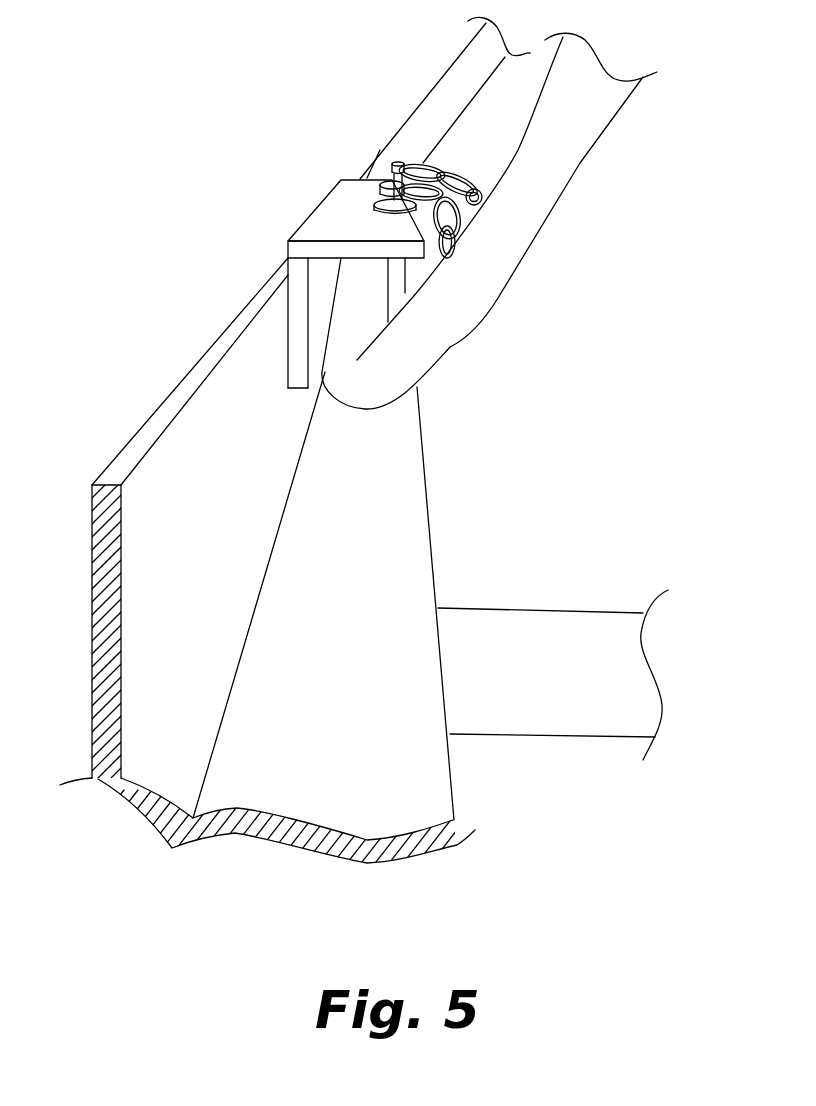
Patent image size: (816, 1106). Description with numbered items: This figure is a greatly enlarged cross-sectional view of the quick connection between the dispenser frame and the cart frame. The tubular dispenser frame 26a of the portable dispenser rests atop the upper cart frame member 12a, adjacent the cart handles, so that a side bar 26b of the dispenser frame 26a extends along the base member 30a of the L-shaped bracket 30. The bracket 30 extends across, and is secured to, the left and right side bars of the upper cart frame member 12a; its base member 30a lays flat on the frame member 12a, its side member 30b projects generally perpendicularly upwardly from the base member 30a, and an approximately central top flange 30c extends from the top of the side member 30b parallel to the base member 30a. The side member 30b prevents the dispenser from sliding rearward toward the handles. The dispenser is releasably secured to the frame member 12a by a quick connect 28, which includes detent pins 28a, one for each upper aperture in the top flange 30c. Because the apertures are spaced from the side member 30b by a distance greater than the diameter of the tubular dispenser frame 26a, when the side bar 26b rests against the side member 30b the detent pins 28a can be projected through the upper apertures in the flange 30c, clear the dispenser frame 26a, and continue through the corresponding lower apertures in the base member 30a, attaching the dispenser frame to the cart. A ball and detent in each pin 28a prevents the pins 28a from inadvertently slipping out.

The upper cart frame member 12a is at (558, 618).
The tubular dispenser frame 26a is at (527, 203).
The side bar 26b is at (353, 290).
The quick connect 28 is at (400, 220).
The detent pins 28a is at (395, 288).
The L-shaped bracket 30 is at (268, 777).
The base member 30a is at (427, 787).
The side member 30b is at (162, 487).
The top flange 30c is at (340, 210).